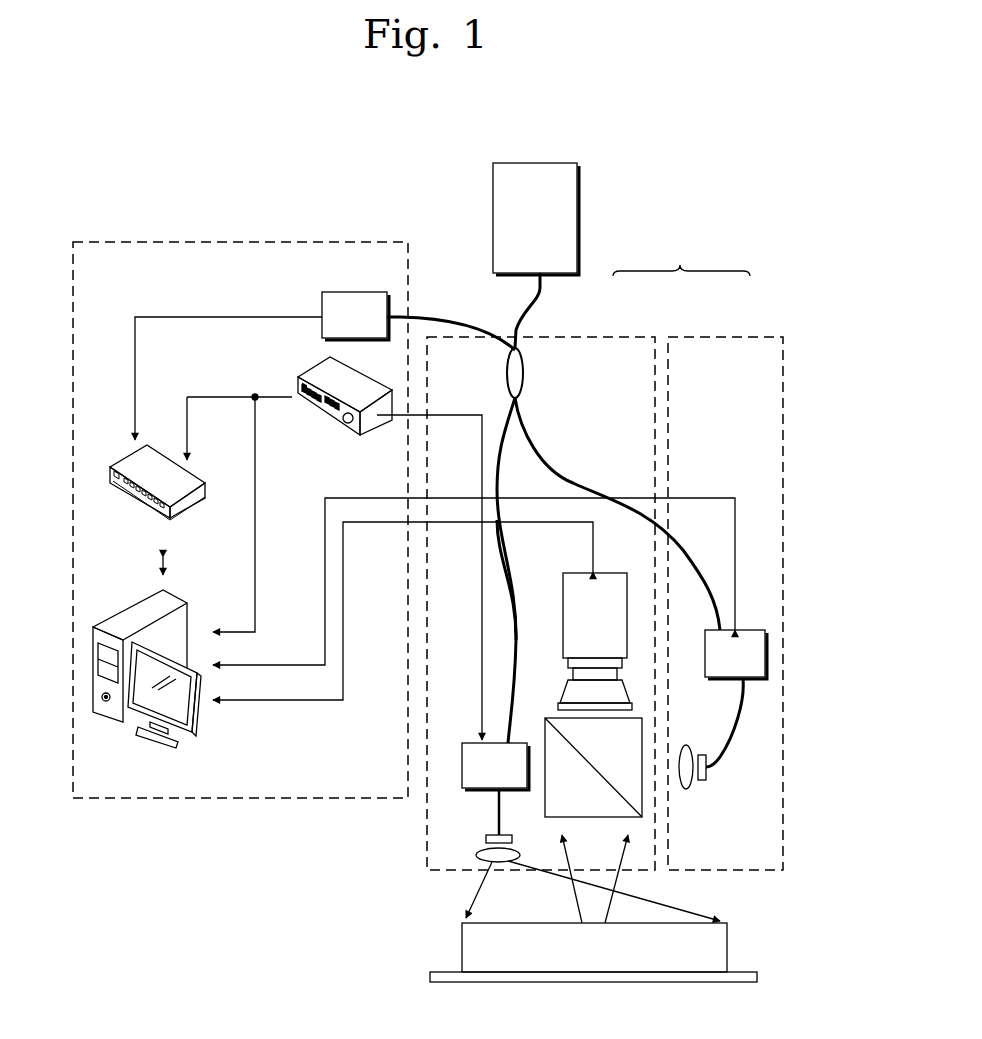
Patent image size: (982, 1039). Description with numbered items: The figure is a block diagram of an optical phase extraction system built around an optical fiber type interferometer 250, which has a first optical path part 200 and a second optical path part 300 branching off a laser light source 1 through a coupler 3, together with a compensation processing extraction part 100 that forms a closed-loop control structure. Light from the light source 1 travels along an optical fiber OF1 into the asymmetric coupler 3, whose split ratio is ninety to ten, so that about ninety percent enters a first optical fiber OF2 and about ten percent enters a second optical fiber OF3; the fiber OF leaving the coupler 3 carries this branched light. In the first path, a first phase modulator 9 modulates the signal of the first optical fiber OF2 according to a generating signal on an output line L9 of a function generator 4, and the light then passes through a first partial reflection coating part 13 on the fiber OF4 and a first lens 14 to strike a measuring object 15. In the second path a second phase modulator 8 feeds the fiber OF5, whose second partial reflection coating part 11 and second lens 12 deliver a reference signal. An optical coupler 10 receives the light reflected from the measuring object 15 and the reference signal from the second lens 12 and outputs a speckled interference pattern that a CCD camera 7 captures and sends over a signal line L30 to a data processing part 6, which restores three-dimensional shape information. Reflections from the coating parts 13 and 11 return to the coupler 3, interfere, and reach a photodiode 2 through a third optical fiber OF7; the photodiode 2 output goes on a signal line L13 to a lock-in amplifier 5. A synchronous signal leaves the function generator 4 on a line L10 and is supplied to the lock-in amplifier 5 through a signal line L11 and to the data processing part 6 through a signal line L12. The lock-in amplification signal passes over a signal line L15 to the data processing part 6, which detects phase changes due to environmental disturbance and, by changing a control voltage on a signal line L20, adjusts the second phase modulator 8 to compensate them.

The laser light source 1 is at (548, 163).
The photodiode 2 is at (352, 292).
The coupler 3 is at (521, 366).
The function generator 4 is at (320, 375).
The lock-in amplifier 5 is at (128, 462).
The data processing part 6 is at (128, 615).
The CCD camera 7 is at (605, 573).
The second phase modulator 8 is at (748, 630).
The first phase modulator 9 is at (470, 743).
The optical coupler 10 is at (555, 718).
The second partial reflection coating part 11 is at (703, 782).
The second lens 12 is at (687, 790).
The first partial reflection coating part 13 is at (482, 838).
The first lens 14 is at (478, 853).
The measuring object 15 is at (727, 950).
The compensation processing extraction part 100 is at (265, 242).
The first optical path part 200 is at (617, 337).
The optical fiber type interferometer 250 is at (681, 260).
The second optical path part 300 is at (725, 337).
The output line L9 is at (450, 414).
The sync line from function generator L10 is at (272, 396).
The signal line L11 is at (189, 430).
The signal line L12 is at (257, 513).
The signal line L13 is at (228, 316).
The signal line L15 is at (166, 568).
The signal line L20 is at (275, 664).
The signal line L30 is at (345, 612).
The optical fiber OF is at (518, 420).
The optical fiber OF1 is at (543, 295).
The first optical fiber OF2 is at (517, 603).
The second optical fiber OF3 is at (578, 482).
The optical fiber OF4 is at (492, 803).
The optical fiber OF5 is at (740, 713).
The third optical fiber OF7 is at (436, 312).